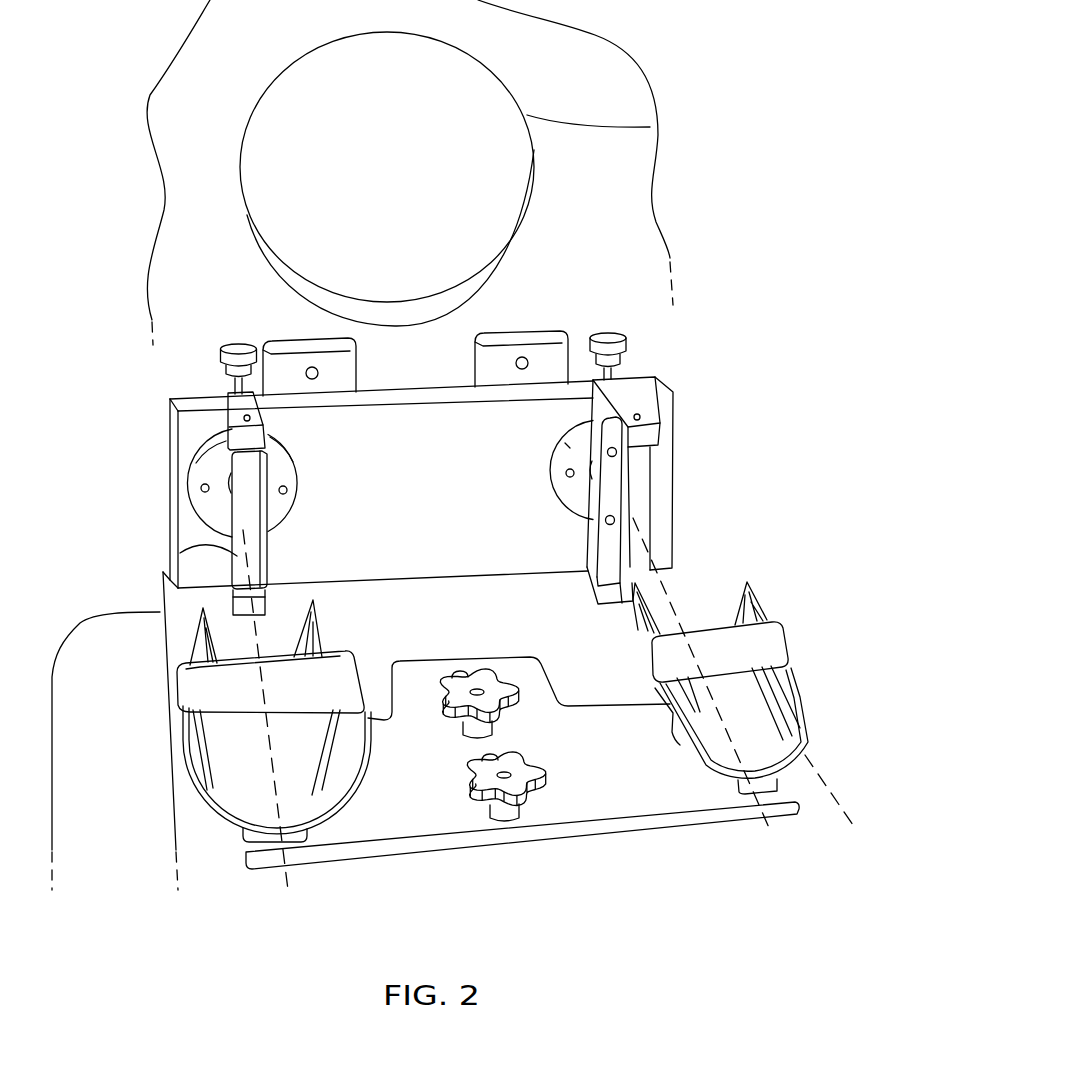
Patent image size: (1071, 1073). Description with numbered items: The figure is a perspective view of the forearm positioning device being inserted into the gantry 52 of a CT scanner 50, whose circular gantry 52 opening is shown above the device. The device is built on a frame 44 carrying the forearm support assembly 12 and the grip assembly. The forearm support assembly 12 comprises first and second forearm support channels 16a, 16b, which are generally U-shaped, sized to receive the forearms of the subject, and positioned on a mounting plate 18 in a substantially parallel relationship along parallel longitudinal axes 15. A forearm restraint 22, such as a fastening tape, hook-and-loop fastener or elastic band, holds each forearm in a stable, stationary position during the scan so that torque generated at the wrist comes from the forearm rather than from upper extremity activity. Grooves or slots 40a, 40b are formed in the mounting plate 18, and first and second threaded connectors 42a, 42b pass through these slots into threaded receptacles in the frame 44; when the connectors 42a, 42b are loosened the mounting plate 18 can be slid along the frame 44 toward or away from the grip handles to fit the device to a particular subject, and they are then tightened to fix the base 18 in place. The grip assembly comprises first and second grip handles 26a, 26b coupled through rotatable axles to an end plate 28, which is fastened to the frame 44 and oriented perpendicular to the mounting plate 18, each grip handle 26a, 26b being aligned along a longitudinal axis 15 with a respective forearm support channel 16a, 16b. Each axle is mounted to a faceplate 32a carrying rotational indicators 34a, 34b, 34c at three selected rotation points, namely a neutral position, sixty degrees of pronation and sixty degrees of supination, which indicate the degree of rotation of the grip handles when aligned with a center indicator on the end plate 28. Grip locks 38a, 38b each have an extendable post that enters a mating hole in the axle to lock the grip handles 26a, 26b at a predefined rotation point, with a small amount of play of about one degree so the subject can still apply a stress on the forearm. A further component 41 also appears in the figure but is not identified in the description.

The forearm support assembly 12 is at (700, 848).
The longitudinal axes 15 is at (252, 572).
The first forearm support channel 16a is at (186, 783).
The second forearm support channel 16b is at (762, 601).
The mounting plate 18 is at (640, 788).
The forearm restraint 22 is at (188, 694).
The first grip handle 26a is at (180, 553).
The second grip handle 26b is at (638, 497).
The end plate 28 is at (452, 510).
The faceplate 32a is at (190, 468).
The indicator 34a is at (204, 460).
The indicator 34b is at (236, 396).
The indicator 34c is at (280, 463).
The grip lock 38a is at (232, 344).
The grip lock 38b is at (606, 333).
The groove 40a is at (456, 671).
The groove 40b is at (494, 753).
The mounting block 41 is at (516, 364).
The first threaded connector 42a is at (490, 672).
The second threaded connector 42b is at (541, 780).
The frame 44 is at (424, 624).
The CT scanner 50 is at (668, 32).
The gantry 52 is at (650, 127).